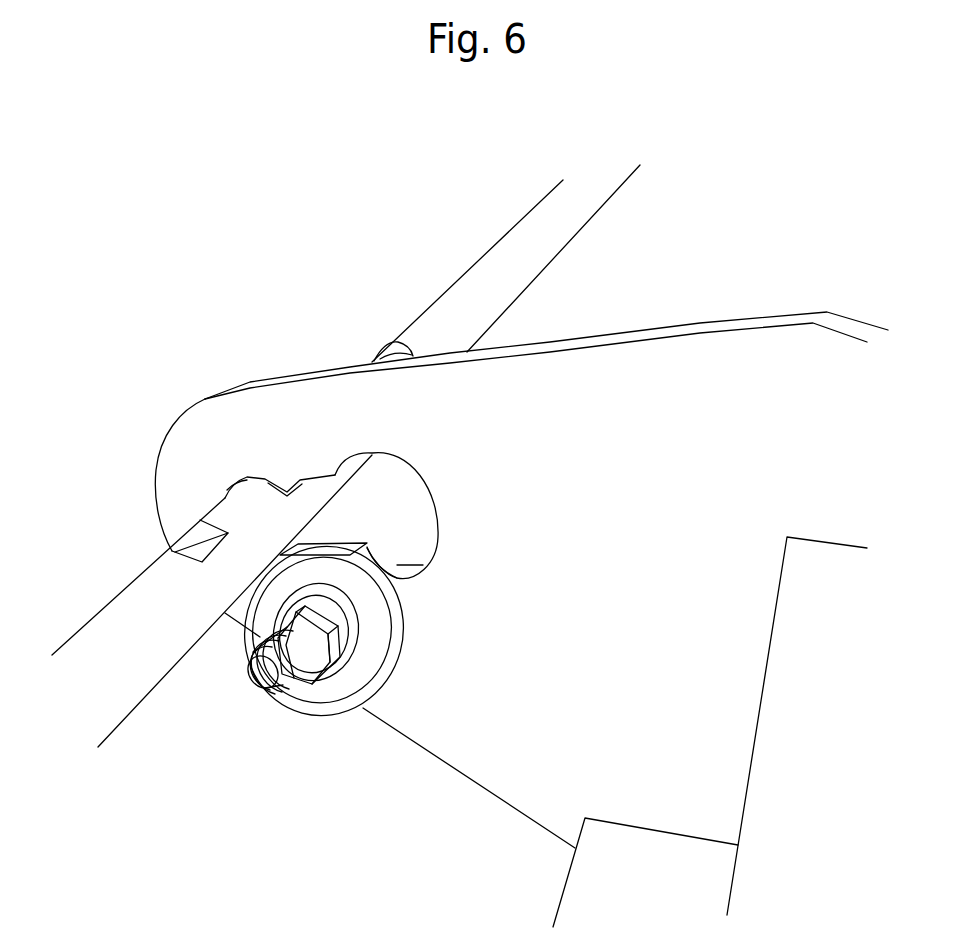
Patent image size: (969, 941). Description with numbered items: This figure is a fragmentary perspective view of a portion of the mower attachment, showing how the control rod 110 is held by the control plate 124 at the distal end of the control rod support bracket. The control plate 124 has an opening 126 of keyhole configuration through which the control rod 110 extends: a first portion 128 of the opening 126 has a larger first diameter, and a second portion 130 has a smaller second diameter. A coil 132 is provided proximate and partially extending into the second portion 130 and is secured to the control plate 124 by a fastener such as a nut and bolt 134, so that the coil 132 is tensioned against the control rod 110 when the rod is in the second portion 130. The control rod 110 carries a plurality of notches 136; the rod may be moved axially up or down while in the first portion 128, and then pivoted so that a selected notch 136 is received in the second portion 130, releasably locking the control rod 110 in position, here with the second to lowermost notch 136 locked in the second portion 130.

The control rod 110 is at (115, 607).
The control plate 124 is at (635, 367).
The opening 126 is at (408, 603).
The first portion 128 is at (405, 515).
The second portion 130 is at (282, 488).
The coil 132 is at (357, 703).
The nut and bolt 134 is at (300, 690).
The notches 136 is at (187, 543).